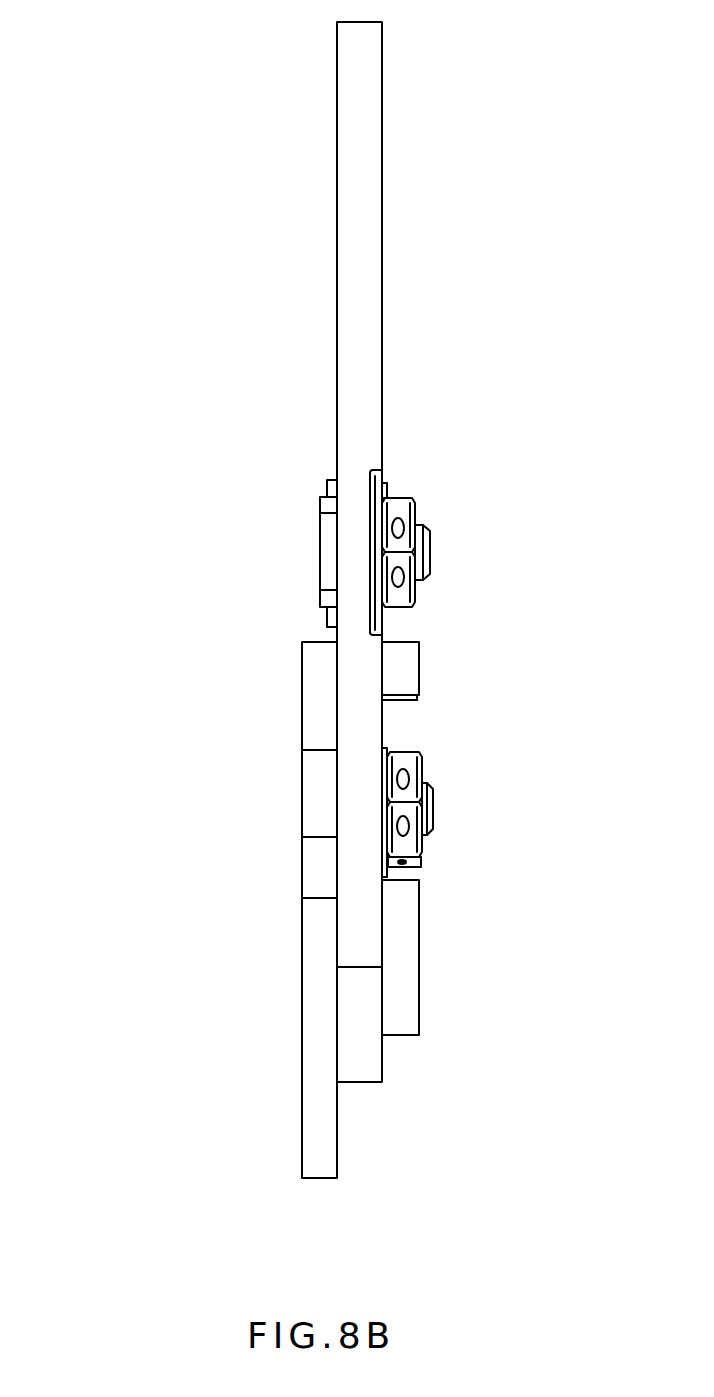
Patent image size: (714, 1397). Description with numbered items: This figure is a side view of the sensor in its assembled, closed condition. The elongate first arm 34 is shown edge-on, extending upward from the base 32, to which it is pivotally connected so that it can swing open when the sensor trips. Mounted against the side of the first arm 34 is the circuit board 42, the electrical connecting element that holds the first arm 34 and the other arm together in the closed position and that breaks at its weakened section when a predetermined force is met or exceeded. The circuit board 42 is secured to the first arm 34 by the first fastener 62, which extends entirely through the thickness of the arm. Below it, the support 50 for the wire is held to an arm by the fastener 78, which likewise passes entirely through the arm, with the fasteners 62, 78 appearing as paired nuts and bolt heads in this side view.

The base 32 is at (317, 1088).
The first arm 34 is at (357, 197).
The circuit board 42 is at (382, 480).
The support 50 is at (383, 745).
The first fastener 62 is at (430, 555).
The fastener 78 is at (433, 812).